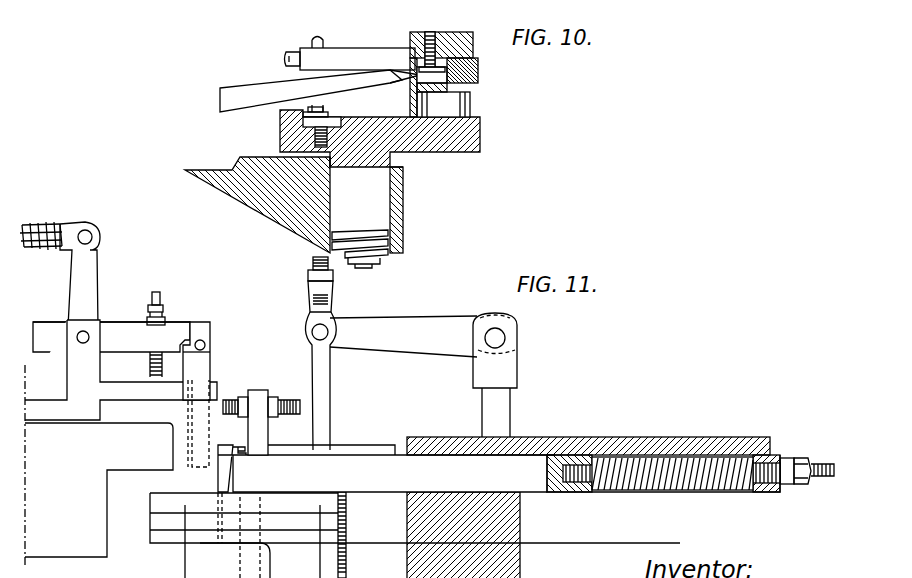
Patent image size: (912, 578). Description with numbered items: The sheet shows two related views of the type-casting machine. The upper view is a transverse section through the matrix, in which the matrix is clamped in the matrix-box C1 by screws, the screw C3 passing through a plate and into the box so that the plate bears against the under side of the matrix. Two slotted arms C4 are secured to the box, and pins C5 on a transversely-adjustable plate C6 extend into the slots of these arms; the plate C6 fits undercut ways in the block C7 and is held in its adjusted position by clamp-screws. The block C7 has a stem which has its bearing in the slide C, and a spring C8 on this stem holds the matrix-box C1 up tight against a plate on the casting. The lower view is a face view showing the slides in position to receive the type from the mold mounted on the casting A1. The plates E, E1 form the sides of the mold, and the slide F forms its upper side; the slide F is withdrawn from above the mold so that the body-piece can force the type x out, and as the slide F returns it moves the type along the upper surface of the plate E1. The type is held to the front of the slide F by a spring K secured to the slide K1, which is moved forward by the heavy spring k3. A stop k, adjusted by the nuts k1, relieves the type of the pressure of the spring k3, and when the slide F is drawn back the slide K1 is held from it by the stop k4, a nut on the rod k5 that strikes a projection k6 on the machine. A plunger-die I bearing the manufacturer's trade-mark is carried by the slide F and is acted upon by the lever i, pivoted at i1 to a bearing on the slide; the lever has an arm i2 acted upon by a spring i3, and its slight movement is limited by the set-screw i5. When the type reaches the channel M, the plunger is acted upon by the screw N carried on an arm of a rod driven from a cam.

In FIG. 10, the slide C is at (478, 75).
In FIG. 10, the matrix-box C1 is at (441, 63).
In FIG. 10, the clamp-screw C3 is at (452, 103).
In FIG. 10, the slotted arm C4 is at (350, 59).
In FIG. 10, the pin C5 is at (316, 66).
In FIG. 10, the transversely-adjustable plate C6 is at (334, 124).
In FIG. 10, the block C7 is at (420, 150).
In FIG. 10, the spring C8 is at (380, 260).
In FIG. 11, the screw N is at (411, 353).
In FIG. 11, the lever i is at (111, 337).
In FIG. 11, the pivot i1 is at (121, 370).
In FIG. 11, the arm i2 is at (80, 274).
In FIG. 11, the spring i3 is at (41, 227).
In FIG. 11, the set-screw i5 is at (160, 290).
In FIG. 11, the plunger-die I is at (218, 352).
In FIG. 11, the casting A1 is at (397, 471).
In FIG. 11, the slide F is at (173, 450).
In FIG. 11, the type x is at (218, 488).
In FIG. 11, the plate E is at (415, 535).
In FIG. 11, the plate E1 is at (254, 503).
In FIG. 11, the channel M is at (351, 535).
In FIG. 11, the spring K is at (237, 486).
In FIG. 11, the slide K1 is at (386, 468).
In FIG. 11, the stop k is at (242, 390).
In FIG. 11, the nut k1 is at (276, 395).
In FIG. 11, the spring k3 is at (632, 485).
In FIG. 11, the stop k4 is at (803, 456).
In FIG. 11, the rod k5 is at (822, 481).
In FIG. 11, the projection k6 is at (788, 452).